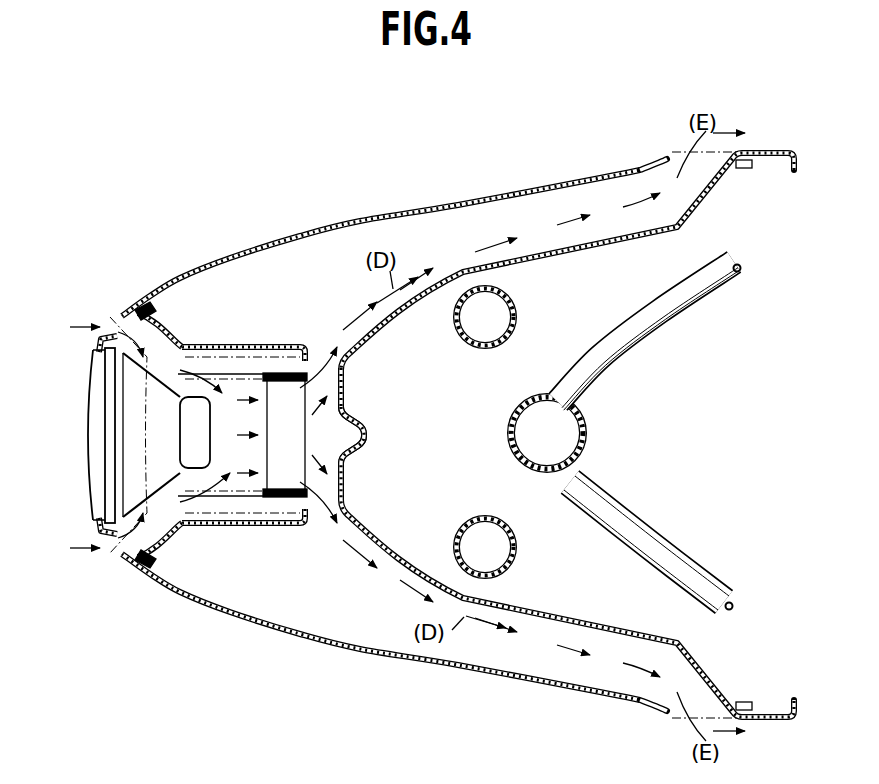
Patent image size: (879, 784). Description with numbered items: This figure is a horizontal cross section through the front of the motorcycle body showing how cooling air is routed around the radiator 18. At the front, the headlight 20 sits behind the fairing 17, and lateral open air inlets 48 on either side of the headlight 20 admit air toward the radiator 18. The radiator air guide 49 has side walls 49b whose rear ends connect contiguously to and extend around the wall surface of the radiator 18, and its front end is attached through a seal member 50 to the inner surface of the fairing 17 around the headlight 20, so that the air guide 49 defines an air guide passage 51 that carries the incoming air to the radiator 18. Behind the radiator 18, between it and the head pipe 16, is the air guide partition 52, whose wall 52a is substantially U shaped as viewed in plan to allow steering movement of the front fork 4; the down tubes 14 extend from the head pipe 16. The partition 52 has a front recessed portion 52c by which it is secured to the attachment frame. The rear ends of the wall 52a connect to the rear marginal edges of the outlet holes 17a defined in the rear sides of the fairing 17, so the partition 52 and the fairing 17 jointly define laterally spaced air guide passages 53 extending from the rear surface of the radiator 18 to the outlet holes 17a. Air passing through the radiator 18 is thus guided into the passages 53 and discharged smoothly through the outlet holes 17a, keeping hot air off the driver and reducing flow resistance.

The front fork 4 is at (518, 313).
The down tubes 14 is at (666, 323).
The head pipe 16 is at (588, 437).
The fairing 17 is at (385, 662).
The outlet holes 17a is at (676, 154).
The radiator 18 is at (287, 513).
The headlight 20 is at (93, 445).
The lateral open air inlets 48 is at (110, 316).
The radiator air guide 49 is at (277, 344).
The side walls 49b is at (243, 343).
The seal member 50 is at (150, 577).
The air guide passage 51 is at (176, 340).
The air guide partition 52 is at (396, 565).
The wall 52a is at (345, 386).
The front recessed portion 52c is at (367, 437).
The air guide passages 53 is at (459, 203).